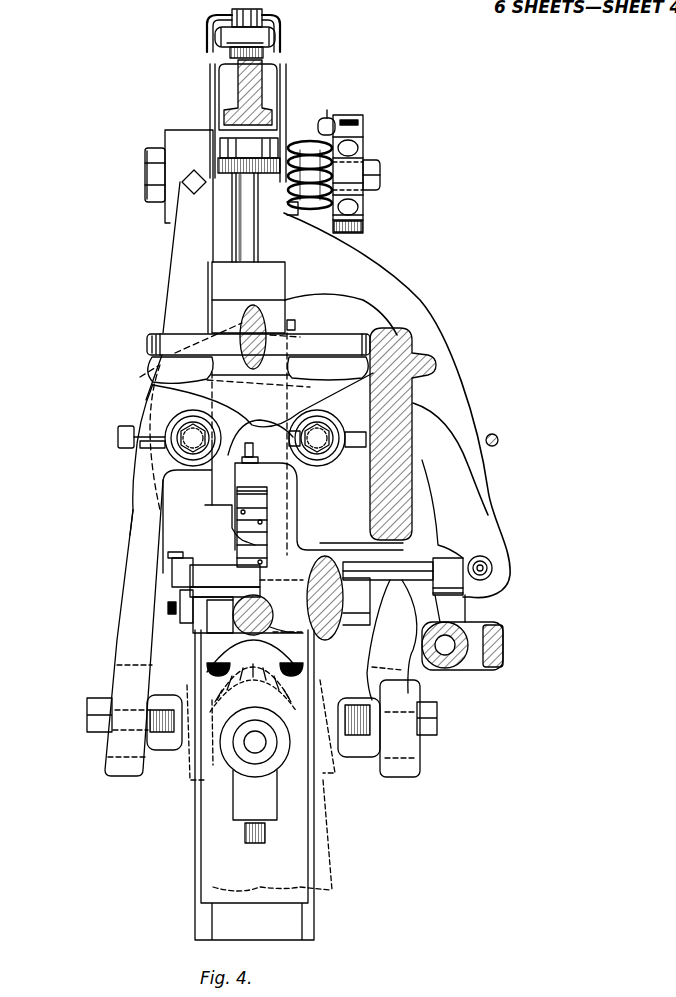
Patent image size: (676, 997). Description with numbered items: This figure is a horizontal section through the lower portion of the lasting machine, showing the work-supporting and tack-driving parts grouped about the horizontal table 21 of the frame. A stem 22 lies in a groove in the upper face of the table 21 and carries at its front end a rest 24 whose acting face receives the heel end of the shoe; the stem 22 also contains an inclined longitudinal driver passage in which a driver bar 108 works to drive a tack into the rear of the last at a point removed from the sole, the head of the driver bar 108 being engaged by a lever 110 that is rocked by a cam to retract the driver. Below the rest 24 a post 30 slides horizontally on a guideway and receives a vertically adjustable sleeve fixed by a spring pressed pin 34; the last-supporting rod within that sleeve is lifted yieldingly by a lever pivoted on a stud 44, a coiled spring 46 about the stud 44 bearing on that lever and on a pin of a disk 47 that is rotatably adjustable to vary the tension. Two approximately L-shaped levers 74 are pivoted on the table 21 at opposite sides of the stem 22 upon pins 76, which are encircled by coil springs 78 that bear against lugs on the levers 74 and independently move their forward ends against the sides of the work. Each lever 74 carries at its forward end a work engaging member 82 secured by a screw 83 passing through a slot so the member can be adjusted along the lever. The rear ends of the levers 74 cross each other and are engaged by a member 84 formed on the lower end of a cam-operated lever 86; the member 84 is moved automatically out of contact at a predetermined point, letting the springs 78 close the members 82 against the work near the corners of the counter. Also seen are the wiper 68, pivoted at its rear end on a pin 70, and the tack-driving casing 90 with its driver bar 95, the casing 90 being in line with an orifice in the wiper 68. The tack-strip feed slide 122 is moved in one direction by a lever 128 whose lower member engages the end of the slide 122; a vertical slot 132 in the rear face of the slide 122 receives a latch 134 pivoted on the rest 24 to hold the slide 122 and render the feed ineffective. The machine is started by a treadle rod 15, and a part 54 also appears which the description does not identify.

The treadle rod 15 is at (499, 438).
The horizontal table 21 is at (175, 508).
The stem 22 is at (278, 302).
The rest 24 is at (153, 633).
The post 30 is at (233, 788).
The spring pressed pin 34 is at (244, 838).
The stud 44 is at (337, 185).
The coiled spring 46 is at (300, 138).
The disk 47 is at (333, 178).
The bolt 54 is at (493, 566).
The wiper 68 is at (240, 630).
The pin 70 is at (215, 528).
The L-shaped levers 74 is at (127, 568).
The pins 76 is at (193, 445).
The coil springs 78 is at (297, 422).
The work engaging member 82 is at (165, 750).
The screw 83 is at (87, 728).
The member 84 is at (375, 330).
The lever 86 is at (266, 324).
The casing 90 is at (235, 626).
The driver bar 95 is at (232, 645).
The driver bar 108 is at (380, 175).
The lever 110 is at (262, 97).
The slide 122 is at (413, 570).
The lever 128 is at (505, 650).
The vertical slot 132 is at (188, 568).
The latch 134 is at (170, 598).